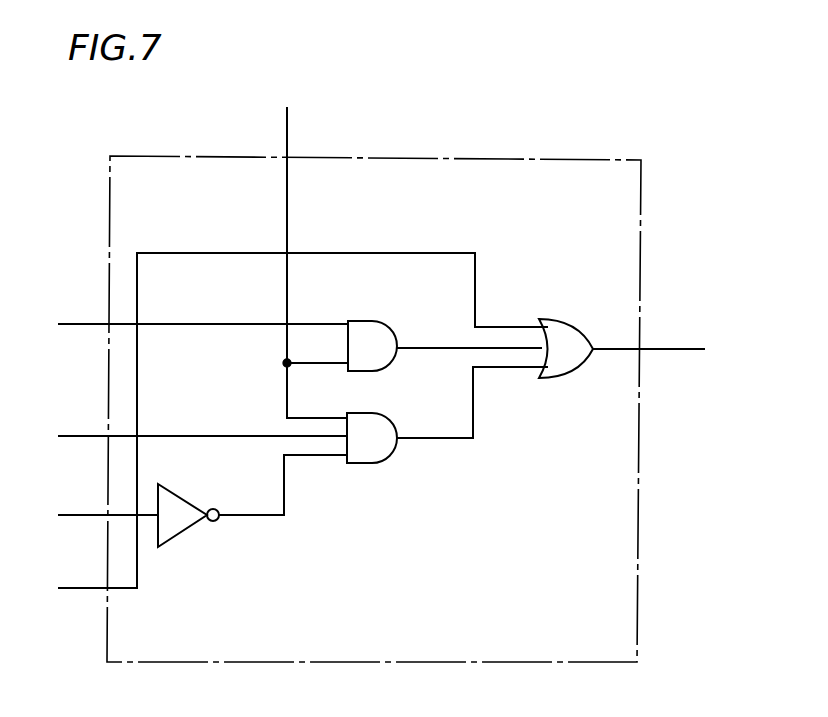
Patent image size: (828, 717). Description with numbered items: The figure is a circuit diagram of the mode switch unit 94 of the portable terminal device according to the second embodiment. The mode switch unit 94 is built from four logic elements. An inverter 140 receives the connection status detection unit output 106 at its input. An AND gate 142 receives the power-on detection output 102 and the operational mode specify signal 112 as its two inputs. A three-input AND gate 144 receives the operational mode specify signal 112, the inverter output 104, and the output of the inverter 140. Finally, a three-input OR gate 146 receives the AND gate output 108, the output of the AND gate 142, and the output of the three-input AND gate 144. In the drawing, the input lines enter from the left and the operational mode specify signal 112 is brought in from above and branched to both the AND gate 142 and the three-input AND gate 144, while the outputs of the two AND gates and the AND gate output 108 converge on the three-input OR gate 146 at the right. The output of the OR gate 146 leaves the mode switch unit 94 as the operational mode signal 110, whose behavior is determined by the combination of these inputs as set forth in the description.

The mode switch unit 94 is at (595, 158).
The power-on detection output 102 is at (96, 323).
The inverter output 104 is at (96, 435).
The connection status detection unit output 106 is at (96, 514).
The AND gate output 108 is at (96, 587).
The operational mode signal 110 is at (675, 349).
The operational mode specify signal 112 is at (287, 123).
The inverter 140 is at (180, 534).
The AND gate 142 is at (365, 320).
The 3-input AND gate 144 is at (362, 464).
The 3-input OR gate 146 is at (560, 319).